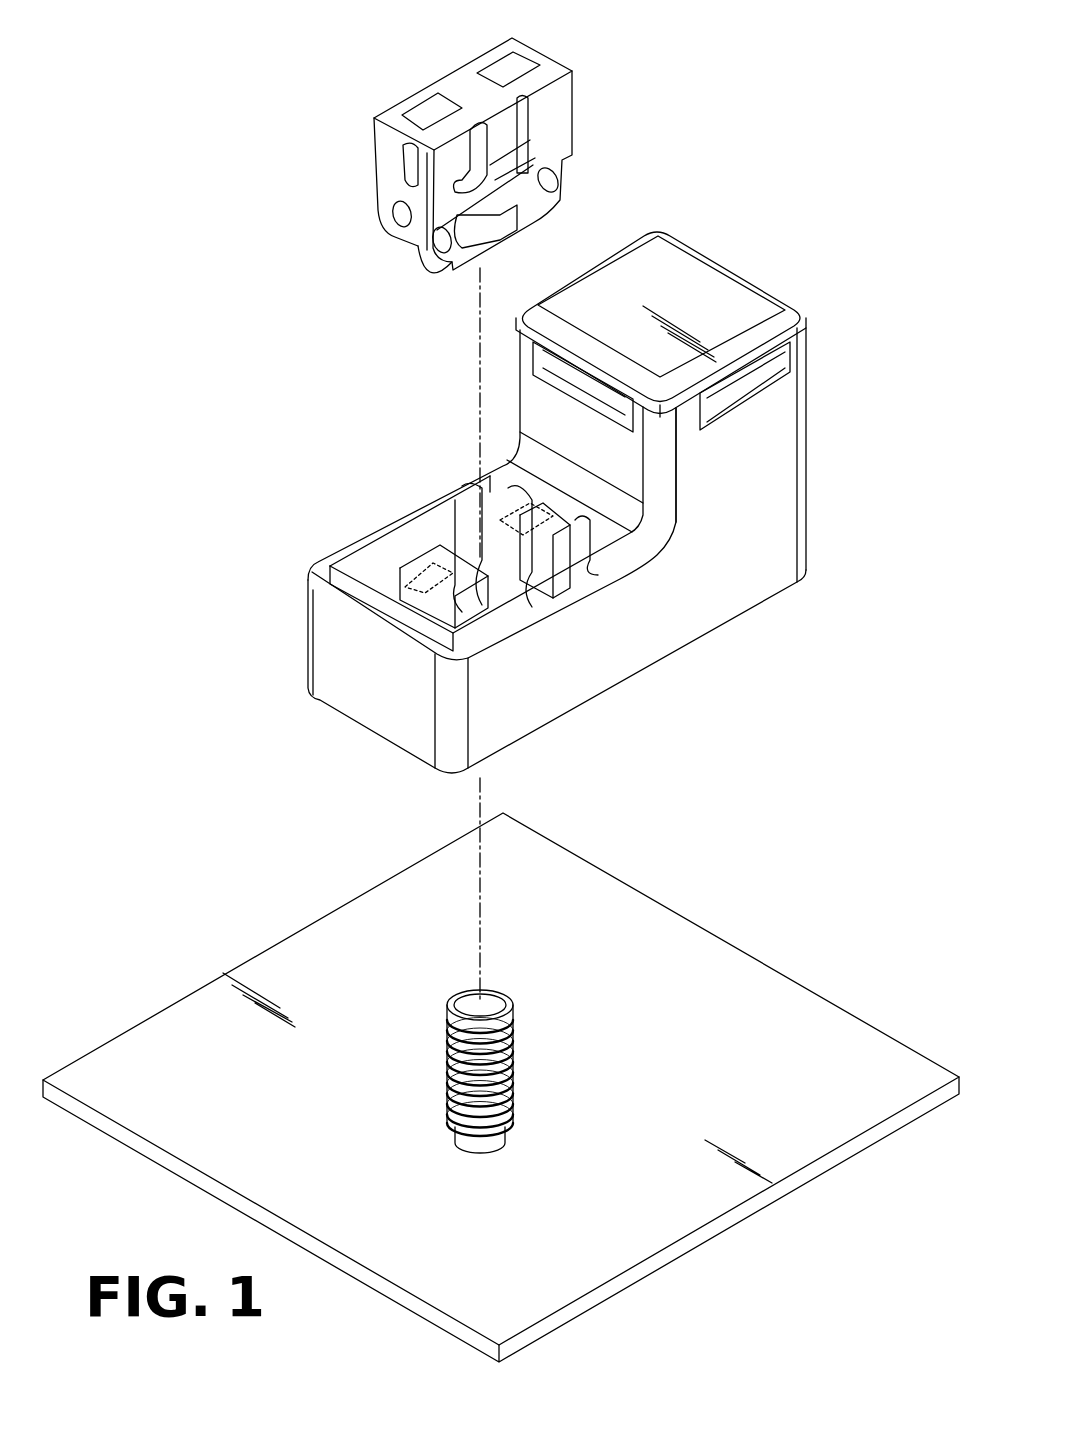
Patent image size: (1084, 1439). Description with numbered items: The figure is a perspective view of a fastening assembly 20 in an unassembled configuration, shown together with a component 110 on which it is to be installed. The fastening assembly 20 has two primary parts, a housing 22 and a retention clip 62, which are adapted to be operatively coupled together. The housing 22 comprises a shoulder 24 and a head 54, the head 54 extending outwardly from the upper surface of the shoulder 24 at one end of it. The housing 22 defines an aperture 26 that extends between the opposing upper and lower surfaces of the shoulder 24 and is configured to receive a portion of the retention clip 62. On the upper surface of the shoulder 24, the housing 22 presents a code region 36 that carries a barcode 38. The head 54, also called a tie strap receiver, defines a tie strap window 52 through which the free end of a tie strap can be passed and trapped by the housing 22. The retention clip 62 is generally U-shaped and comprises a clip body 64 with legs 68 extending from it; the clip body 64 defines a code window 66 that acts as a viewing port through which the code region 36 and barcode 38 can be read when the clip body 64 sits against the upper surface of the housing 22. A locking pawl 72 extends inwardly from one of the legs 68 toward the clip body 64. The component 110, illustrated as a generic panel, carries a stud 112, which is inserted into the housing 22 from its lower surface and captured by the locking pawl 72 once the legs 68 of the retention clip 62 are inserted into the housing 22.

The fastening assembly 20 is at (747, 108).
The housing 22 is at (286, 632).
The shoulder 24 is at (335, 548).
The aperture 26 is at (590, 522).
The code region 36 is at (420, 586).
The barcode 38 is at (523, 503).
The tie strap window 52 is at (552, 360).
The head 54 is at (746, 268).
The retention clip 62 is at (348, 148).
The clip body 64 is at (537, 60).
The code window 66 is at (490, 68).
The legs 68 is at (437, 253).
The locking pawl 72 is at (500, 148).
The component 110 is at (830, 1030).
The stud 112 is at (467, 1003).